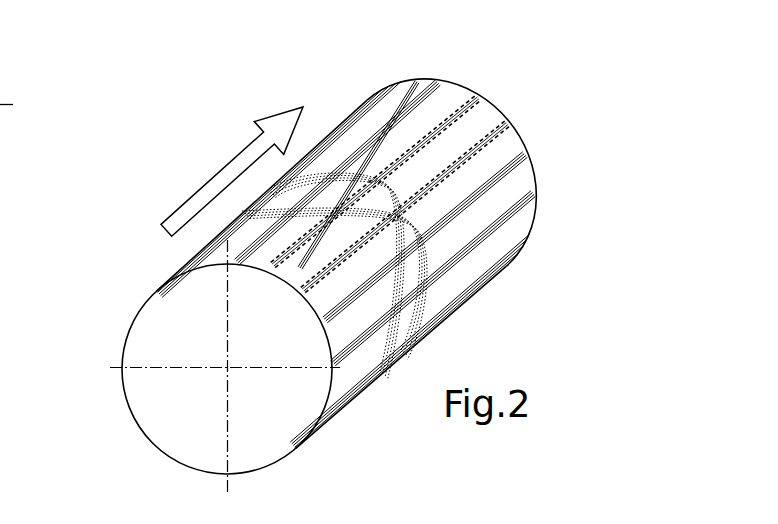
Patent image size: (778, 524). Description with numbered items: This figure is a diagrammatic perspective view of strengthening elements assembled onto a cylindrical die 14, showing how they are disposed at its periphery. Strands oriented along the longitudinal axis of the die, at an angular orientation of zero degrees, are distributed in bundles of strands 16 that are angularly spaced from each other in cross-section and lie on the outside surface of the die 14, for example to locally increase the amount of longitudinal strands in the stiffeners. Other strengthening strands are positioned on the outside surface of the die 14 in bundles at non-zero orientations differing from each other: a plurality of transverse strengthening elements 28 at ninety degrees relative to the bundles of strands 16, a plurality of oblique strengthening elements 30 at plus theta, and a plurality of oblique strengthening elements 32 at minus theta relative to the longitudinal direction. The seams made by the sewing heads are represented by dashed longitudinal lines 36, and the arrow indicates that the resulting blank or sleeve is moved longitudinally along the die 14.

The die 14 is at (100, 362).
The bundles of strands 16 is at (372, 107).
The transverse strengthening elements 28 is at (447, 310).
The oblique strengthening elements 30 is at (515, 262).
The oblique strengthening elements 32 is at (405, 350).
The dashed longitudinal lines 36 is at (287, 256).